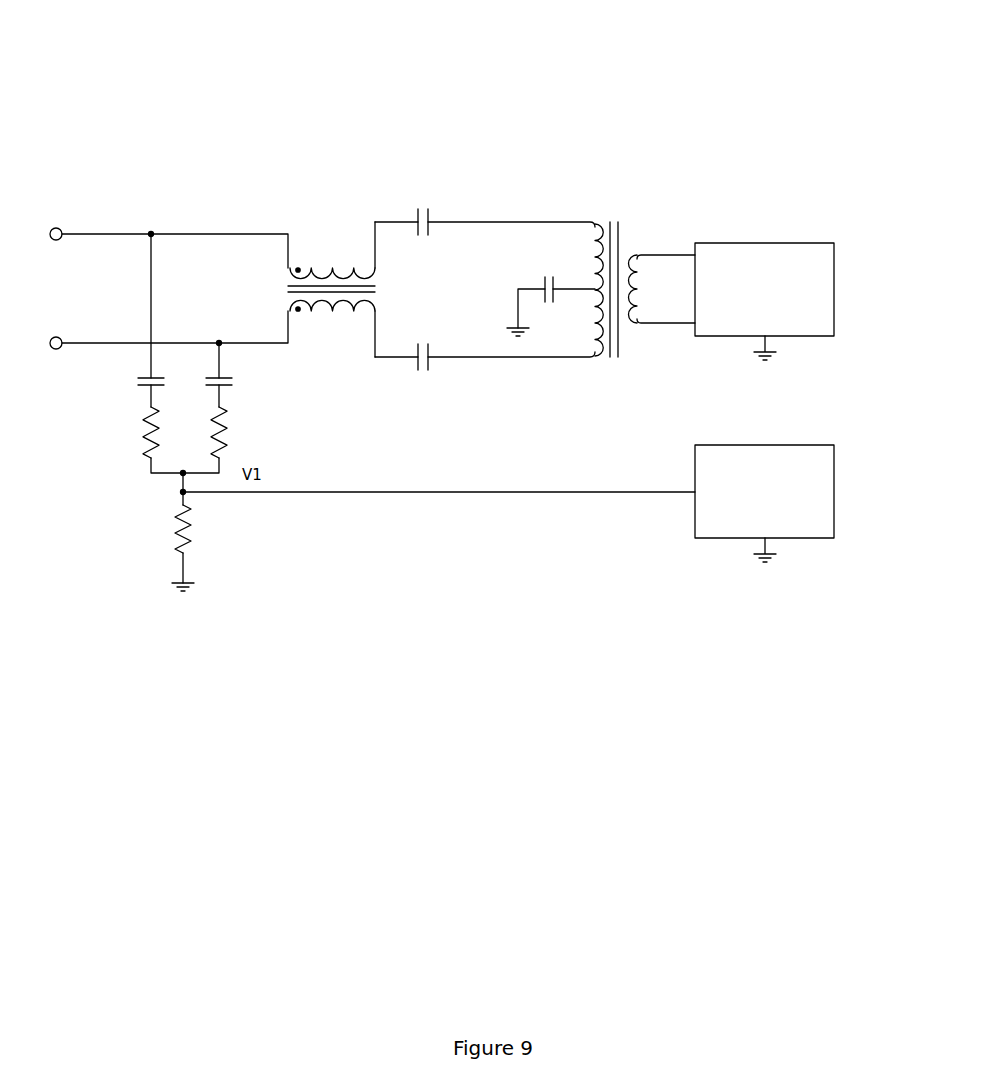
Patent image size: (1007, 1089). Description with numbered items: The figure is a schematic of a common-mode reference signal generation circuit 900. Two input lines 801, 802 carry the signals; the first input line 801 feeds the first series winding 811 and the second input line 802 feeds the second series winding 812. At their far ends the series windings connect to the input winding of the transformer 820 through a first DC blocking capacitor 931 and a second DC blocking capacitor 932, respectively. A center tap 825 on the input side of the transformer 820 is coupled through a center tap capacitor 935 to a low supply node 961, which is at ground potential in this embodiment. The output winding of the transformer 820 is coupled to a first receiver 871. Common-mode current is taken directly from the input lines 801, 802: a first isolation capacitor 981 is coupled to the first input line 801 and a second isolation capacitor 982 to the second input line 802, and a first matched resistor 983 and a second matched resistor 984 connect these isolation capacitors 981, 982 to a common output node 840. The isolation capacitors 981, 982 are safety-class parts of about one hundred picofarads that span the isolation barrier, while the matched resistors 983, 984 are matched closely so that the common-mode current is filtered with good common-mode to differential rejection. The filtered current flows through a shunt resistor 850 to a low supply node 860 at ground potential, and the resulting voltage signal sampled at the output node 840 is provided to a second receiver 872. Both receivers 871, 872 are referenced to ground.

The circuit 900 is at (426, 86).
The first input line 801 is at (57, 228).
The second input line 802 is at (58, 337).
The first series winding 811 is at (341, 266).
The second series winding 812 is at (340, 313).
The first DC blocking capacitor 931 is at (403, 218).
The second DC blocking capacitor 932 is at (408, 362).
The center tap capacitor 935 is at (545, 283).
The low supply node 961 is at (516, 306).
The center tap 825 is at (593, 291).
The transformer 820 is at (612, 220).
The first receiver 871 is at (834, 290).
The second receiver 872 is at (834, 492).
The first isolation capacitor 981 is at (138, 383).
The second isolation capacitor 982 is at (233, 383).
The first matched resistor 983 is at (143, 433).
The second matched resistor 984 is at (236, 432).
The output node 840 is at (183, 490).
The shunt resistor 850 is at (183, 535).
The low supply node 860 is at (183, 570).